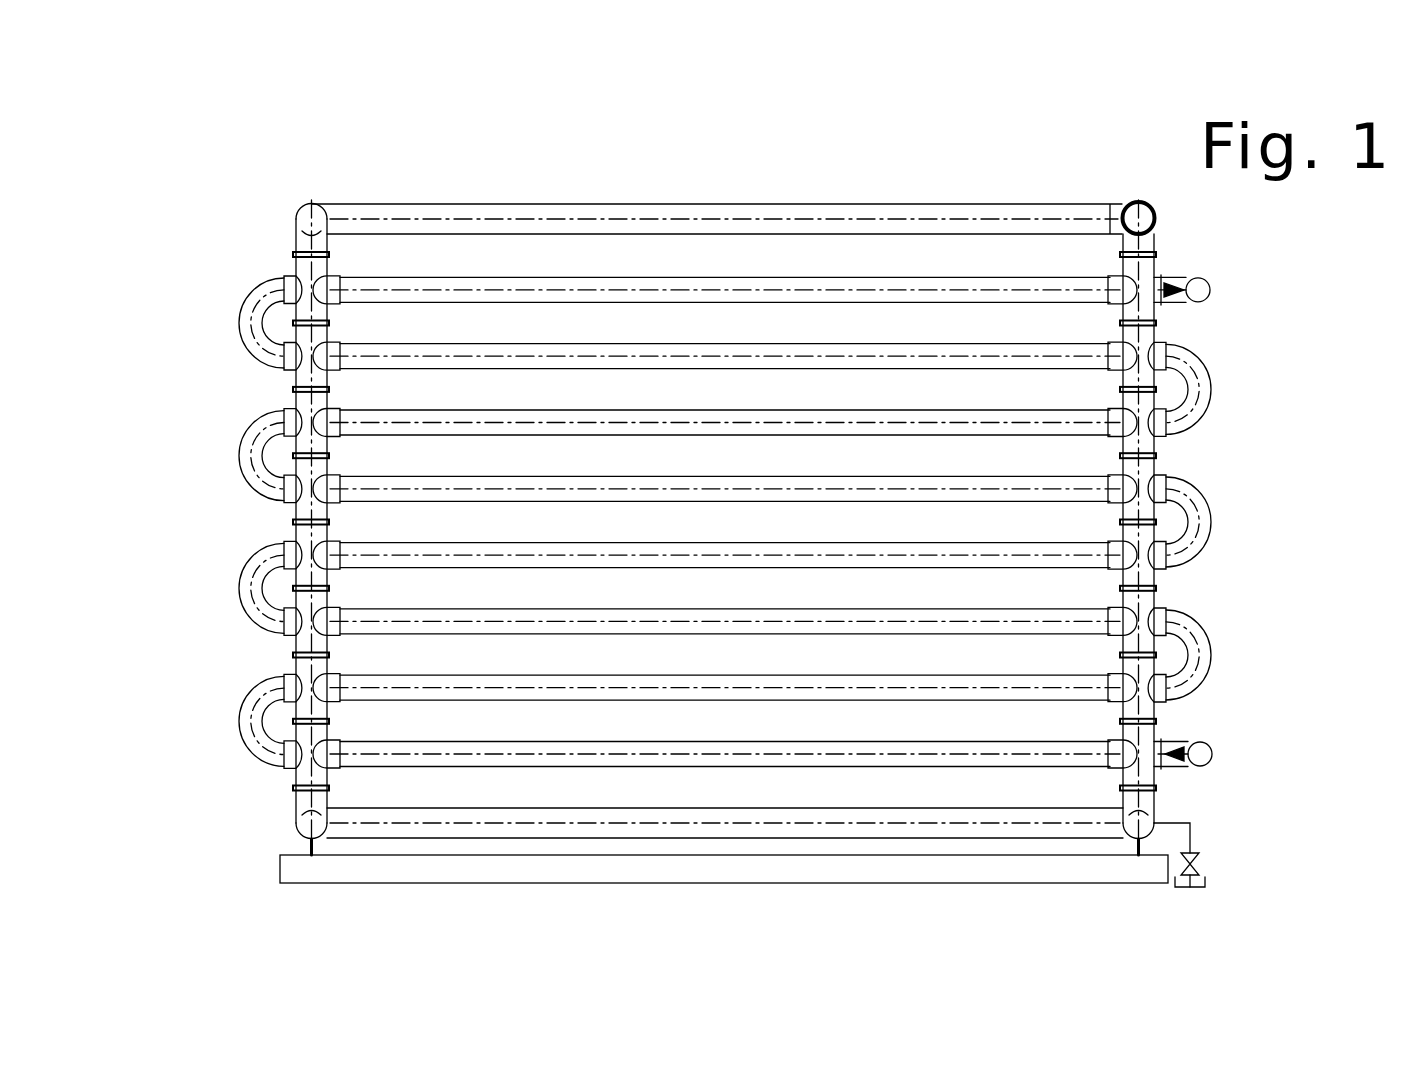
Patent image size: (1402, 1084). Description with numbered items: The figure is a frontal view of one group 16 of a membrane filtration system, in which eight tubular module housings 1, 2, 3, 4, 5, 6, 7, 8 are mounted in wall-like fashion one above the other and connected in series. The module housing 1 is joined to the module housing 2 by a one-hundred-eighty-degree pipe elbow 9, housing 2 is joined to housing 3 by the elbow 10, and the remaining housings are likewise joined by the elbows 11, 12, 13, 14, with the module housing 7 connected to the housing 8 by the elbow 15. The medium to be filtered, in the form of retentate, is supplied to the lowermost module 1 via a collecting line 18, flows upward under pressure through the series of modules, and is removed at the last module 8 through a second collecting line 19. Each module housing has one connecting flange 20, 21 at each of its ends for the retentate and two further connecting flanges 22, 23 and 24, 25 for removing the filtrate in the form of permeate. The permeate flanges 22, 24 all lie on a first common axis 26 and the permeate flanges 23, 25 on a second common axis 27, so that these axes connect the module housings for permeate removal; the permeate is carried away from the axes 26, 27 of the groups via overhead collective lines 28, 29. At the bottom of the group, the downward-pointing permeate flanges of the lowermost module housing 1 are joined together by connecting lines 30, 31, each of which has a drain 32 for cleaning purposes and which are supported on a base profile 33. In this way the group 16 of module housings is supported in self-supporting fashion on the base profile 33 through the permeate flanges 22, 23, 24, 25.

The tubular module housing 1 is at (588, 754).
The tubular module housing 2 is at (532, 688).
The tubular module housing 3 is at (484, 622).
The tubular module housing 4 is at (530, 556).
The tubular module housing 5 is at (537, 490).
The tubular module housing 6 is at (484, 423).
The tubular module housing 7 is at (614, 356).
The tubular module housing 8 is at (537, 290).
The 180° pipe elbow 9 is at (236, 733).
The pipe elbow 10 is at (1210, 665).
The pipe elbow 11 is at (240, 598).
The pipe elbow 12 is at (1210, 523).
The pipe elbow 13 is at (240, 455).
The pipe elbow 14 is at (1210, 392).
The pipe elbow 15 is at (240, 320).
The group 16 is at (178, 669).
The collecting line 18 is at (1212, 763).
The second collecting line 19 is at (1211, 286).
The connecting flange 20 is at (1158, 740).
The connecting flange 21 is at (300, 781).
The connecting flange 22 is at (1145, 577).
The connecting flange 23 is at (1130, 528).
The connecting flange 24 is at (314, 584).
The connecting flange 25 is at (297, 535).
The first common axis 26 is at (309, 199).
The second common axis 27 is at (1143, 193).
The overhead collective line 28 is at (1130, 203).
The overhead collective line 29 is at (298, 209).
The connecting line 30 is at (1130, 815).
The connecting line 31 is at (326, 828).
The drain 32 is at (1202, 866).
The base profile 33 is at (285, 873).